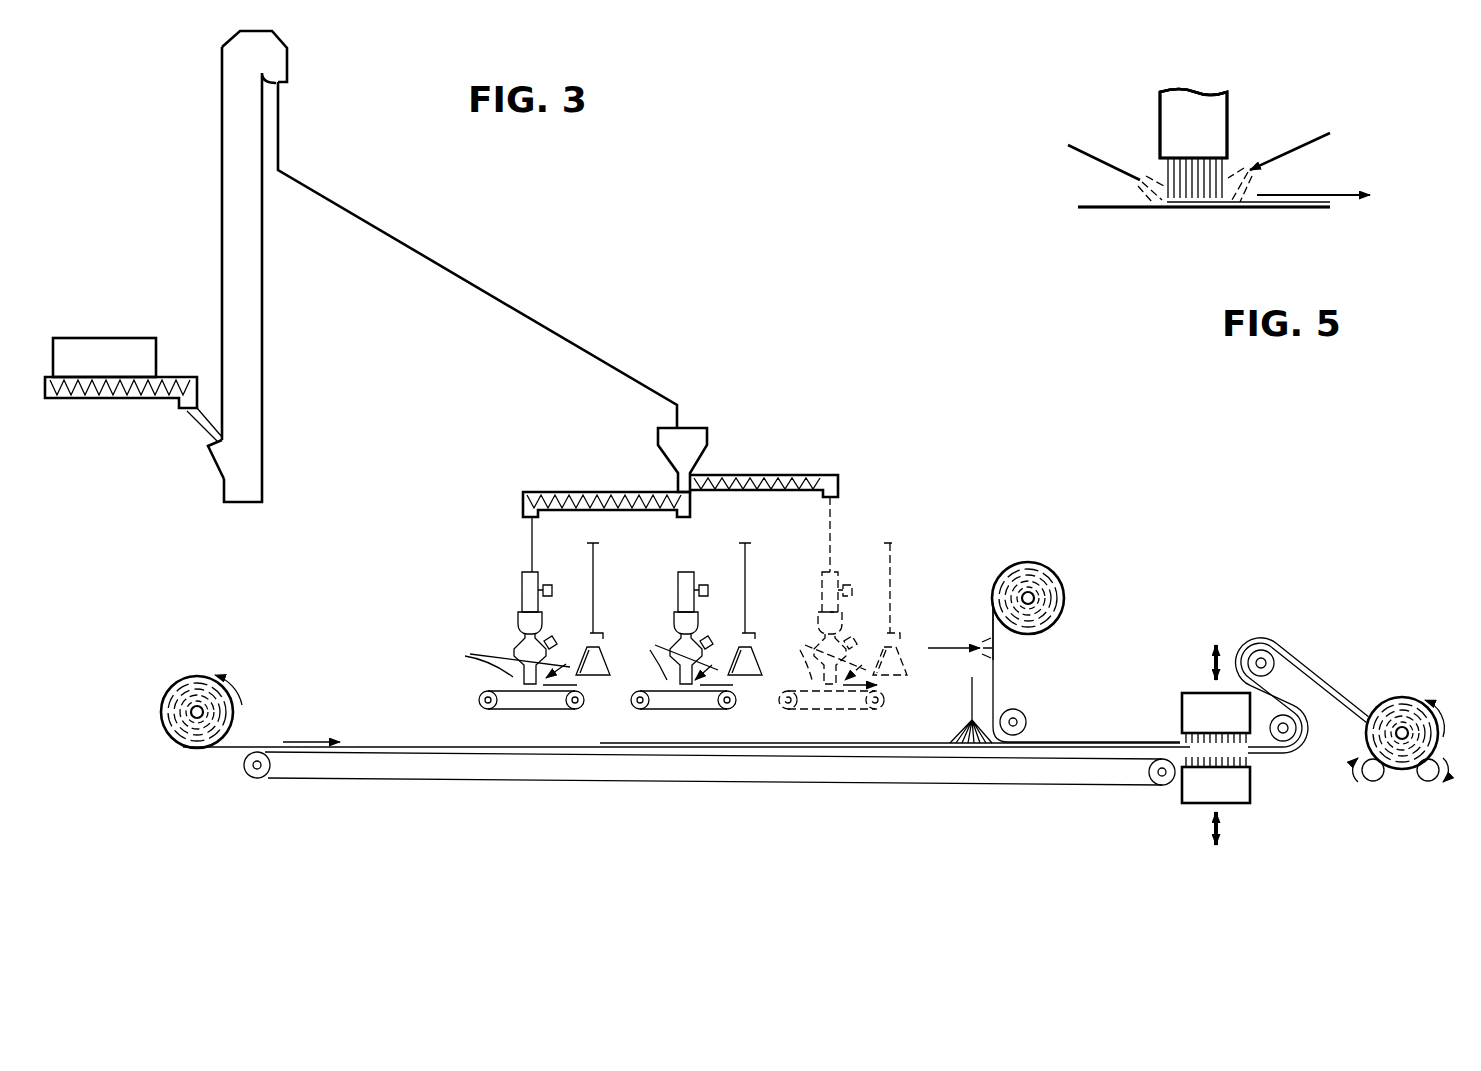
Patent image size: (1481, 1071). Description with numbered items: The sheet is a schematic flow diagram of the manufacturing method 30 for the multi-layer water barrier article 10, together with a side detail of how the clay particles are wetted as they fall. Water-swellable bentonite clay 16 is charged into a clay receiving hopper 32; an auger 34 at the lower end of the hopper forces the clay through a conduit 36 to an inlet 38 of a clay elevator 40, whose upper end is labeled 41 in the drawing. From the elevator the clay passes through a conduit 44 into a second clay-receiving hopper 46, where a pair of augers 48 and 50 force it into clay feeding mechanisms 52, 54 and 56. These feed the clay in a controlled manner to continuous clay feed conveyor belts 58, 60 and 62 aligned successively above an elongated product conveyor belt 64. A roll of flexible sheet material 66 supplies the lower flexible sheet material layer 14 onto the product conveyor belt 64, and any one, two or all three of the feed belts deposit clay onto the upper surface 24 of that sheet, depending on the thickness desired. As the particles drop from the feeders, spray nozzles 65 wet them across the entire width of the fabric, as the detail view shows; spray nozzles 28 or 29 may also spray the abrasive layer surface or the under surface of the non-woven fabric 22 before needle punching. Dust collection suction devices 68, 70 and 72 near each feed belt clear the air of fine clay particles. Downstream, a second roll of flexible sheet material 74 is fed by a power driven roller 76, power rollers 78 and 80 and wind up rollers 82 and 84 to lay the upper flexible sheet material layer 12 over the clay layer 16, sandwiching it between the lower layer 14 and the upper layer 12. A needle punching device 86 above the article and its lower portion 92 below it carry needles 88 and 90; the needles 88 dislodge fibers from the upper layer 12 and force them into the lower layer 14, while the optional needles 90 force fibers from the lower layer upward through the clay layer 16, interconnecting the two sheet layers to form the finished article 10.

In FIG. 3, the multi-layer article 10 is at (1257, 747).
In FIG. 3, the upper flexible sheet material layer 12 is at (996, 667).
In FIG. 3, the lower flexible sheet material layer 14 is at (228, 752).
In FIG. 3, the water-swellable clay layer 16 is at (92, 338).
In FIG. 5, the water-swellable clay layer 16 is at (1252, 195).
In FIG. 3, the non-woven fabric 22 is at (992, 618).
In FIG. 3, the upper surface of the flexible sheet material 24 is at (265, 748).
In FIG. 3, the spray nozzle 28 is at (942, 648).
In FIG. 3, the spray nozzle 29 is at (972, 693).
In FIG. 3, the method of manufacturing the multi-layered article 30 is at (563, 274).
In FIG. 3, the clay receiving hopper 32 is at (160, 344).
In FIG. 3, the auger 34 is at (164, 380).
In FIG. 3, the conduit 36 is at (200, 435).
In FIG. 3, the inlet of the clay elevator 38 is at (224, 442).
In FIG. 3, the clay elevator 40 is at (262, 324).
In FIG. 3, the duct top 41 is at (278, 84).
In FIG. 3, the conduit 44 is at (468, 278).
In FIG. 3, the clay-receiving hopper 46 is at (695, 440).
In FIG. 3, the auger 48 is at (582, 492).
In FIG. 3, the auger 50 is at (767, 472).
In FIG. 3, the clay feeding mechanism 52 is at (513, 627).
In FIG. 5, the clay feeding mechanism 52 is at (1172, 123).
In FIG. 3, the clay feeding mechanism 54 is at (698, 568).
In FIG. 5, the clay feeding mechanism 54 is at (1172, 123).
In FIG. 3, the clay feeding mechanism 56 is at (843, 568).
In FIG. 5, the clay feeding mechanism 56 is at (1172, 123).
In FIG. 3, the clay feed conveyor belt 58 is at (555, 712).
In FIG. 5, the clay feed conveyor belt 58 is at (1242, 208).
In FIG. 3, the clay feed conveyor belt 60 is at (677, 712).
In FIG. 5, the clay feed conveyor belt 60 is at (1242, 208).
In FIG. 3, the clay feed conveyor belt 62 is at (840, 713).
In FIG. 5, the clay feed conveyor belt 62 is at (1242, 208).
In FIG. 3, the product conveyor belt 64 is at (795, 782).
In FIG. 3, the spray nozzles 65 is at (652, 655).
In FIG. 5, the spray nozzles 65 is at (1087, 158).
In FIG. 3, the roll of flexible sheet material 66 is at (180, 682).
In FIG. 3, the dust collection suction device 68 is at (608, 663).
In FIG. 3, the dust collection suction device 70 is at (760, 663).
In FIG. 3, the dust collection suction device 72 is at (903, 657).
In FIG. 3, the second roll of flexible sheet material 74 is at (1027, 563).
In FIG. 3, the power driven roller 76 is at (1023, 722).
In FIG. 3, the power roller 78 is at (1283, 740).
In FIG. 3, the power roller 80 is at (1273, 650).
In FIG. 3, the wind up roller 82 is at (1372, 777).
In FIG. 3, the wind up roller 84 is at (1430, 777).
In FIG. 3, the needle punching device 86 is at (1180, 698).
In FIG. 3, the needles 88 is at (1187, 739).
In FIG. 3, the needles 90 is at (1153, 783).
In FIG. 3, the needle-punching device lower portion 92 is at (1242, 790).